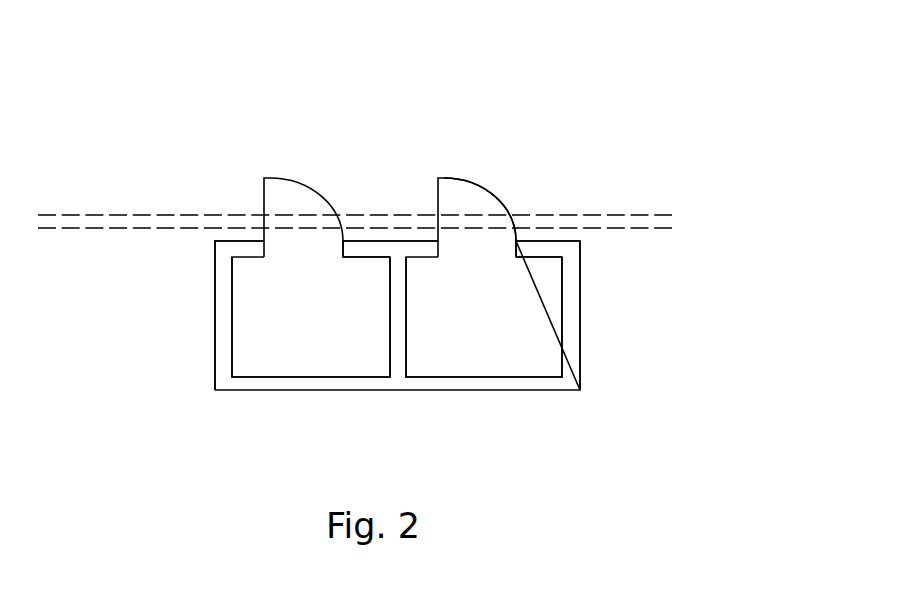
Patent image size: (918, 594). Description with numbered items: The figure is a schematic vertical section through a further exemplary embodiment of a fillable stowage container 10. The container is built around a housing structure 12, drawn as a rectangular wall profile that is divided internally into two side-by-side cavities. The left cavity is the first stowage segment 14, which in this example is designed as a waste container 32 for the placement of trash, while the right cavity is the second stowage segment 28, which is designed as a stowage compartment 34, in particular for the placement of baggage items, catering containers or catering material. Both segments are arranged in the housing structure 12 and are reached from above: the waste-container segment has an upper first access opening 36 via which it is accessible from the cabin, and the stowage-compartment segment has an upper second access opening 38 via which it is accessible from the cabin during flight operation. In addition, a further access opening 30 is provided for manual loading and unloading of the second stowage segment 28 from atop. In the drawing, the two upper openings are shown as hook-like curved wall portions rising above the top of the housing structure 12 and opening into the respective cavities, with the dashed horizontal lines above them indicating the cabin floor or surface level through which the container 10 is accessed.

The fillable stowage container 10 is at (596, 305).
The housing structure 12 is at (215, 300).
The first stowage segment 14 is at (369, 282).
The second stowage segment 28 is at (540, 277).
The further access opening 30 is at (480, 208).
The waste container 32 is at (277, 314).
The stowage compartment 34 is at (481, 314).
The upper first access opening 36 is at (284, 159).
The upper second access opening 38 is at (440, 153).